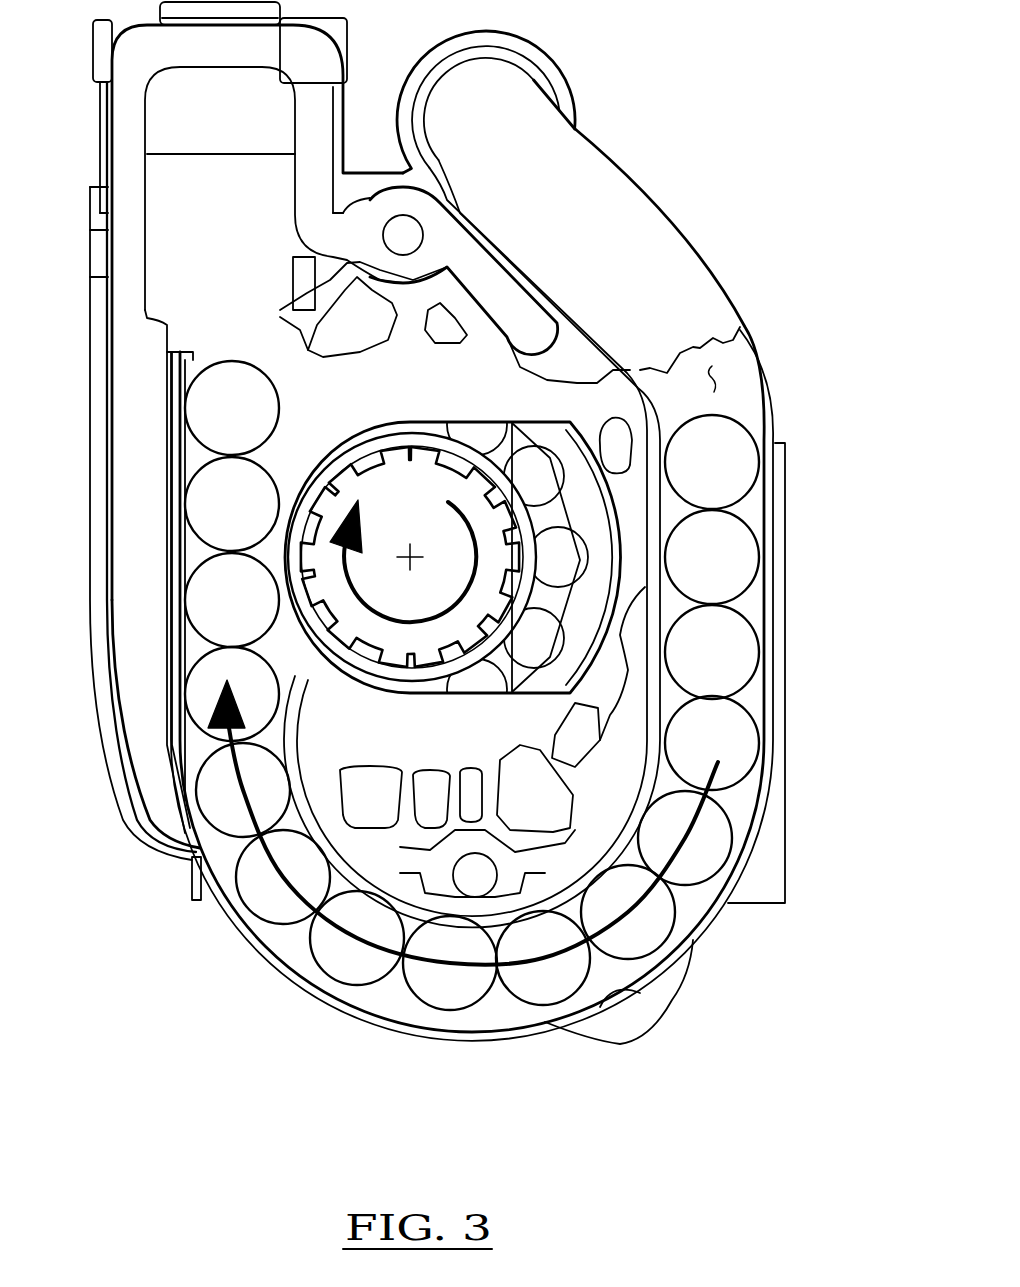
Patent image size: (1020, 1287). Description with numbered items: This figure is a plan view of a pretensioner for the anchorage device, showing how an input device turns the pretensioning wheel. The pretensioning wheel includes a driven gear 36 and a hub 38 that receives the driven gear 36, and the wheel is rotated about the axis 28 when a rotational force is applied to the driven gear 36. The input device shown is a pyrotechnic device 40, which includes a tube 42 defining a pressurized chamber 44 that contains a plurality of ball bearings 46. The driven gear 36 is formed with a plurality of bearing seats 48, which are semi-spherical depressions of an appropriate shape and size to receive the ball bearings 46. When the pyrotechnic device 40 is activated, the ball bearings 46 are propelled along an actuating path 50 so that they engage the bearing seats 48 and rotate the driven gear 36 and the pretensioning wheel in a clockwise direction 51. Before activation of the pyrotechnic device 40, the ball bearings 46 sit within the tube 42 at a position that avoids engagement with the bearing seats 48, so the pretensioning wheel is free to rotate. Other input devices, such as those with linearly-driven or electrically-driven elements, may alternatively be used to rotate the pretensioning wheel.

The pyrotechnic device 40 is at (652, 105).
The tube 42 is at (673, 227).
The pressurized chamber 44 is at (716, 372).
The driven gear 36 is at (510, 457).
The hub 38 is at (513, 514).
The axis 28 is at (410, 557).
The ball bearings 46 is at (743, 717).
The bearing seats 48 is at (340, 634).
The actuating path 50 is at (453, 975).
The clockwise direction 51 is at (378, 616).